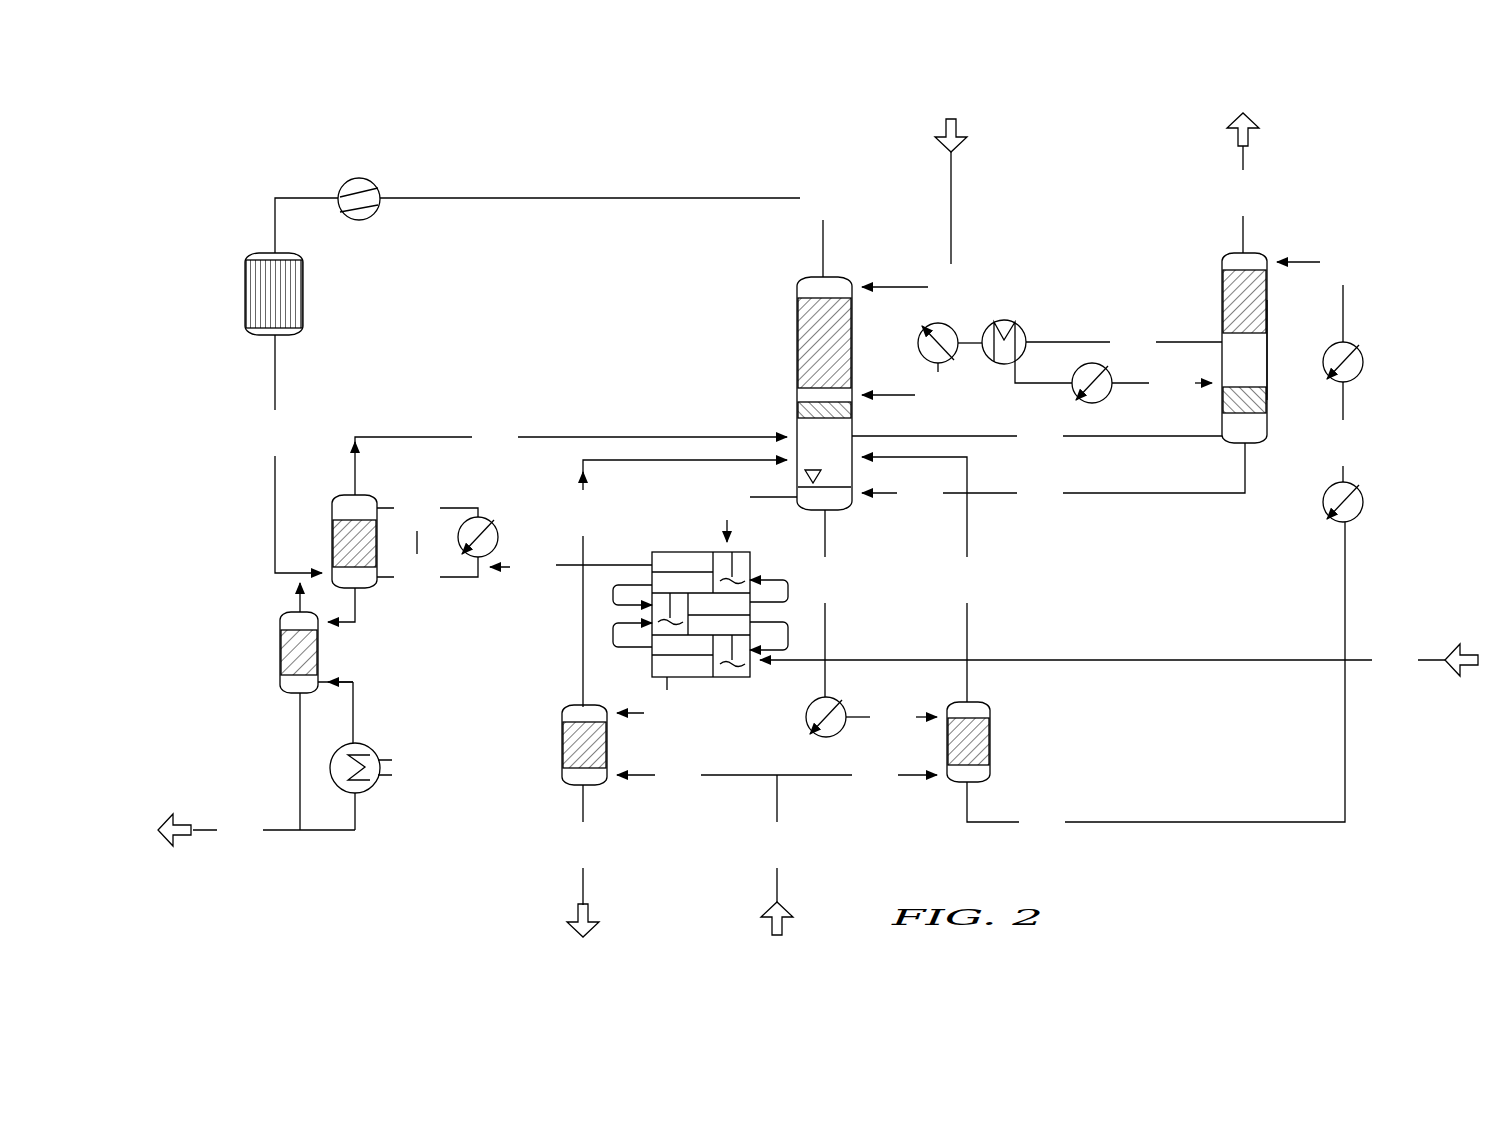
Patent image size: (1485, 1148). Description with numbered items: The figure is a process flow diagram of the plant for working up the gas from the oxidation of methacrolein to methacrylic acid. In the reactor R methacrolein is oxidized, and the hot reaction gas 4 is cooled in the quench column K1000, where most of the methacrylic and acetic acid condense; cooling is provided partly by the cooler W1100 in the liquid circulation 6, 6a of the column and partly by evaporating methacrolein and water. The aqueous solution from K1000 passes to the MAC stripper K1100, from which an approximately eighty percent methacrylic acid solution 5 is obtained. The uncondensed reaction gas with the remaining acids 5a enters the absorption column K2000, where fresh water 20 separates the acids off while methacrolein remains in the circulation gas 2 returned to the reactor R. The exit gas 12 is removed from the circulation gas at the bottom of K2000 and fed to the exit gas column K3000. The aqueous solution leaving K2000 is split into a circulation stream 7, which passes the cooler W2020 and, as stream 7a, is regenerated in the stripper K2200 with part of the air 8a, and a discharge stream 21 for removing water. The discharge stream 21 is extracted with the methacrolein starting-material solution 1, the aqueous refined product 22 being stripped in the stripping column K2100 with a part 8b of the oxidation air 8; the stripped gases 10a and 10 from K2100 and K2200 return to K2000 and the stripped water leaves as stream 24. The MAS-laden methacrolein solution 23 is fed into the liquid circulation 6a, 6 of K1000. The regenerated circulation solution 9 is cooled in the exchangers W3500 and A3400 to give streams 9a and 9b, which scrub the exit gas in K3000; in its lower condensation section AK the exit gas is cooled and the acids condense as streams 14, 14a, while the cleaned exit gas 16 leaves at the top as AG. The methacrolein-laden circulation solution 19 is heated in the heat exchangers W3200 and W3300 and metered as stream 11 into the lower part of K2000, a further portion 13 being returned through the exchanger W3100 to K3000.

The methacrolein solution 1 is at (1372, 660).
The circulation gas 2 is at (800, 197).
The reaction gas 4 is at (252, 433).
The methacrylic acid solution 5 is at (217, 830).
The uncondensed reaction gas with remaining MAS and ES 5a is at (472, 437).
The liquid circulation 6 is at (394, 508).
The liquid circulation 6a is at (394, 577).
The circulation solution 7 is at (802, 580).
The circulation stream 7a is at (870, 717).
The air 8 is at (754, 845).
The stripping gas branch to K2200 8a is at (852, 775).
The air branch 8b is at (655, 775).
The circulation solution 9 is at (1019, 822).
The circulation solution 9a is at (1320, 443).
The circulation solution 9b is at (1320, 262).
The K2200 overhead stream 10 is at (944, 580).
The K2100 overhead stream 10a is at (560, 513).
The W3300 cooled stream 11 is at (915, 395).
The exit gas 12 is at (1017, 436).
The W3100 cooled stream to K3000 13 is at (1149, 383).
The condensed acids 14 is at (897, 493).
The condensed acids 14a is at (1017, 493).
The exit gas 16 is at (1220, 193).
The circulation solution 19 is at (1110, 342).
The fresh water 20 is at (928, 287).
The discharge stream 21 is at (704, 497).
The aqueous refined product 22 is at (644, 713).
The methacrolein solution 23 is at (510, 567).
The K2100 bottom product stream 24 is at (560, 845).
The reactor R is at (284, 294).
The quench column K1000 is at (294, 541).
The MAC stripper K1100 is at (329, 652).
The cooler W1100 is at (436, 655).
The absorption column K2000 is at (787, 393).
The stripping column K2100 is at (551, 745).
The stripper K2200 is at (1000, 742).
The exit gas column K3000 is at (1244, 389).
The condensation section AK is at (1285, 356).
The exhaust gas AG is at (1243, 114).
The heat exchanger W3300 is at (910, 353).
The heat exchanger W3200 is at (997, 323).
The cooler W3100 is at (1085, 396).
The cooler W2020 is at (802, 717).
The heat exchanger A3400 is at (1377, 352).
The heat exchanger W3500 is at (1377, 494).